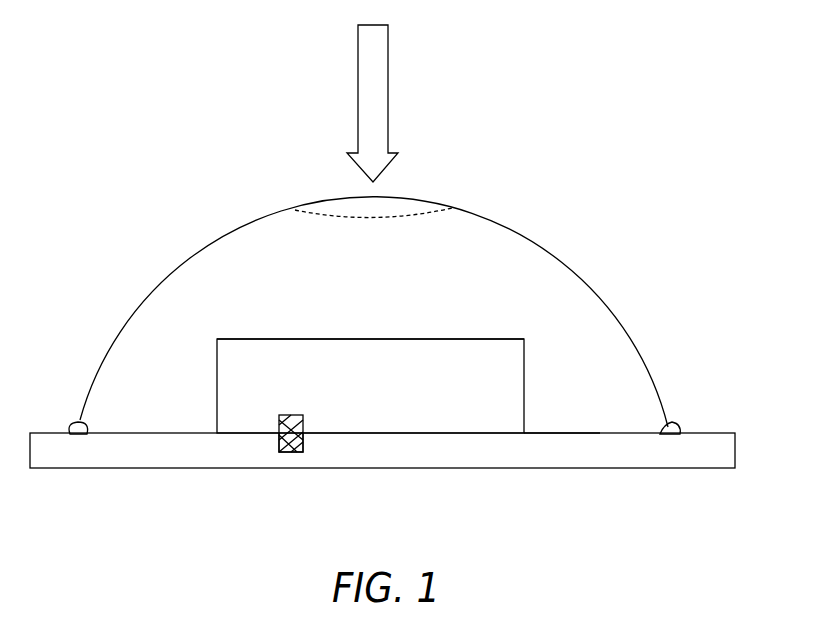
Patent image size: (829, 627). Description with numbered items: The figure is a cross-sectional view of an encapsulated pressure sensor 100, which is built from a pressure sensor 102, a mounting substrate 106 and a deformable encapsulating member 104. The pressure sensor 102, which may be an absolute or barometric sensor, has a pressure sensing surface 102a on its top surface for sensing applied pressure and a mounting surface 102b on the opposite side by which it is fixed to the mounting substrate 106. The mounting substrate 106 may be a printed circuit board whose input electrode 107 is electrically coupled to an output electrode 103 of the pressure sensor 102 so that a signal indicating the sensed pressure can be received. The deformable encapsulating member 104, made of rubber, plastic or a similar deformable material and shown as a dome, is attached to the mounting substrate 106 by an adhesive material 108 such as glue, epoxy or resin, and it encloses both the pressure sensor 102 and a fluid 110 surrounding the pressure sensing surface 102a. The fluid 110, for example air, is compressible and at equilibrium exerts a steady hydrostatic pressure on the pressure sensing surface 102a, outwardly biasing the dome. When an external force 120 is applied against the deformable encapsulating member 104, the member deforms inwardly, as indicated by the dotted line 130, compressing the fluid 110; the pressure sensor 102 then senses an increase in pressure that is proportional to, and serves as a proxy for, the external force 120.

The encapsulated pressure sensor 100 is at (631, 108).
The pressure sensor 102 is at (457, 350).
The pressure sensing surface 102a is at (388, 338).
The mounting surface 102b is at (570, 434).
The output electrode 103 is at (290, 425).
The deformable encapsulating member 104 is at (532, 240).
The mounting substrate 106 is at (178, 455).
The input electrode 107 is at (295, 447).
The adhesive material 108 is at (678, 427).
The fluid 110 is at (335, 287).
The external force 120 is at (388, 62).
The dotted line 130 is at (396, 205).